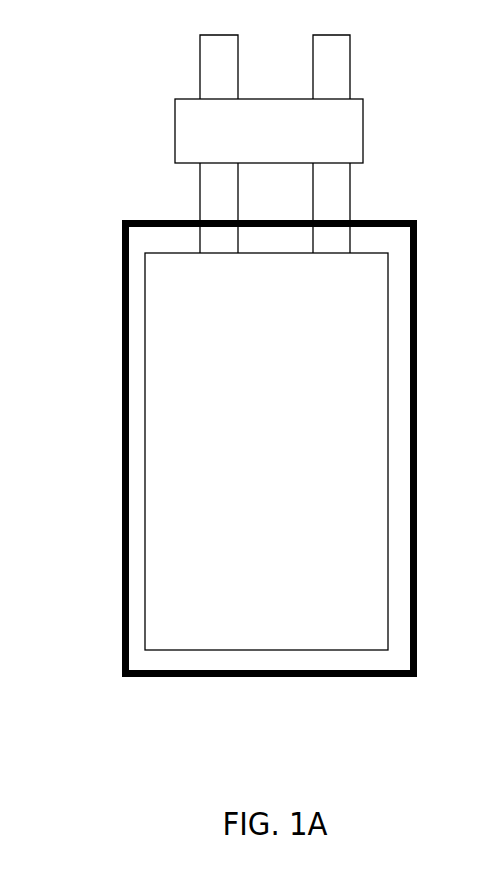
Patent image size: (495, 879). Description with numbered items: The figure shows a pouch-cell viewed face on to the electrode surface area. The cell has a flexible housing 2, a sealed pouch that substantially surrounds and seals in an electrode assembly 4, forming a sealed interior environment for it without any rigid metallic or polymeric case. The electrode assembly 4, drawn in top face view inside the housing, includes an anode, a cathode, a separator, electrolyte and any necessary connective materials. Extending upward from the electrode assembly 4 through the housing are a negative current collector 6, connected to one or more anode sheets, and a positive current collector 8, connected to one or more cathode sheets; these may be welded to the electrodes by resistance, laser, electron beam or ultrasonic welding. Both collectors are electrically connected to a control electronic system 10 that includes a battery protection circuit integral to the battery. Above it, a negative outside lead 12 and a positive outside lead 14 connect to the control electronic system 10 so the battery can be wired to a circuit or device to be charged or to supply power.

The flexible housing 2 is at (113, 637).
The electrode assembly 4 is at (266, 451).
The negative current collector 6 is at (200, 207).
The positive current collector 8 is at (355, 208).
The control electronic system 10 is at (269, 131).
The negative outside lead 12 is at (219, 67).
The positive outside lead 14 is at (332, 67).